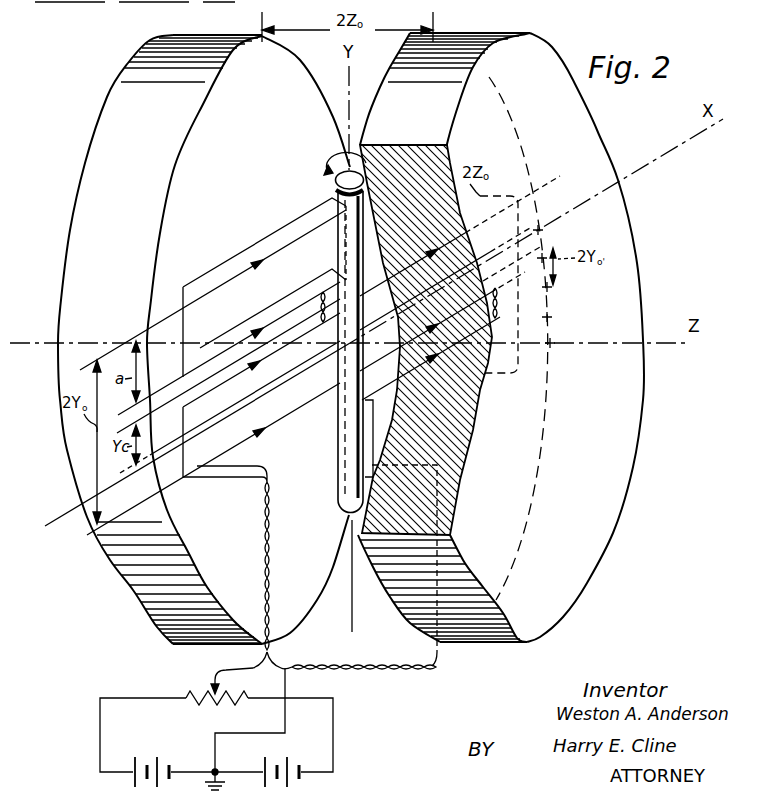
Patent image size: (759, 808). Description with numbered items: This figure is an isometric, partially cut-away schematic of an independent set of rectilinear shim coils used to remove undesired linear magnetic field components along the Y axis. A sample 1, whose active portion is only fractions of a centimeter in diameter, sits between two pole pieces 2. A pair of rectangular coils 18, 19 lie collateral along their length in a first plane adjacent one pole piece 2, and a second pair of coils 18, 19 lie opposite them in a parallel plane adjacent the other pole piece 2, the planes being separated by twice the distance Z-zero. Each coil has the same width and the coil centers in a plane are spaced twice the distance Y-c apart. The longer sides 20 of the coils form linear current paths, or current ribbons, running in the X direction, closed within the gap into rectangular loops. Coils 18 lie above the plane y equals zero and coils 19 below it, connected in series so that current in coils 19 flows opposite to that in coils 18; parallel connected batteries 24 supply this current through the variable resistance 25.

The sample 1 is at (333, 181).
The pole piece 2 is at (65, 456).
The rectangular coil 18 is at (186, 328).
The rectangular coil 19 is at (186, 410).
The linear portion of coil 20 is at (267, 248).
The battery 24 is at (150, 762).
The variable resistance 25 is at (230, 702).